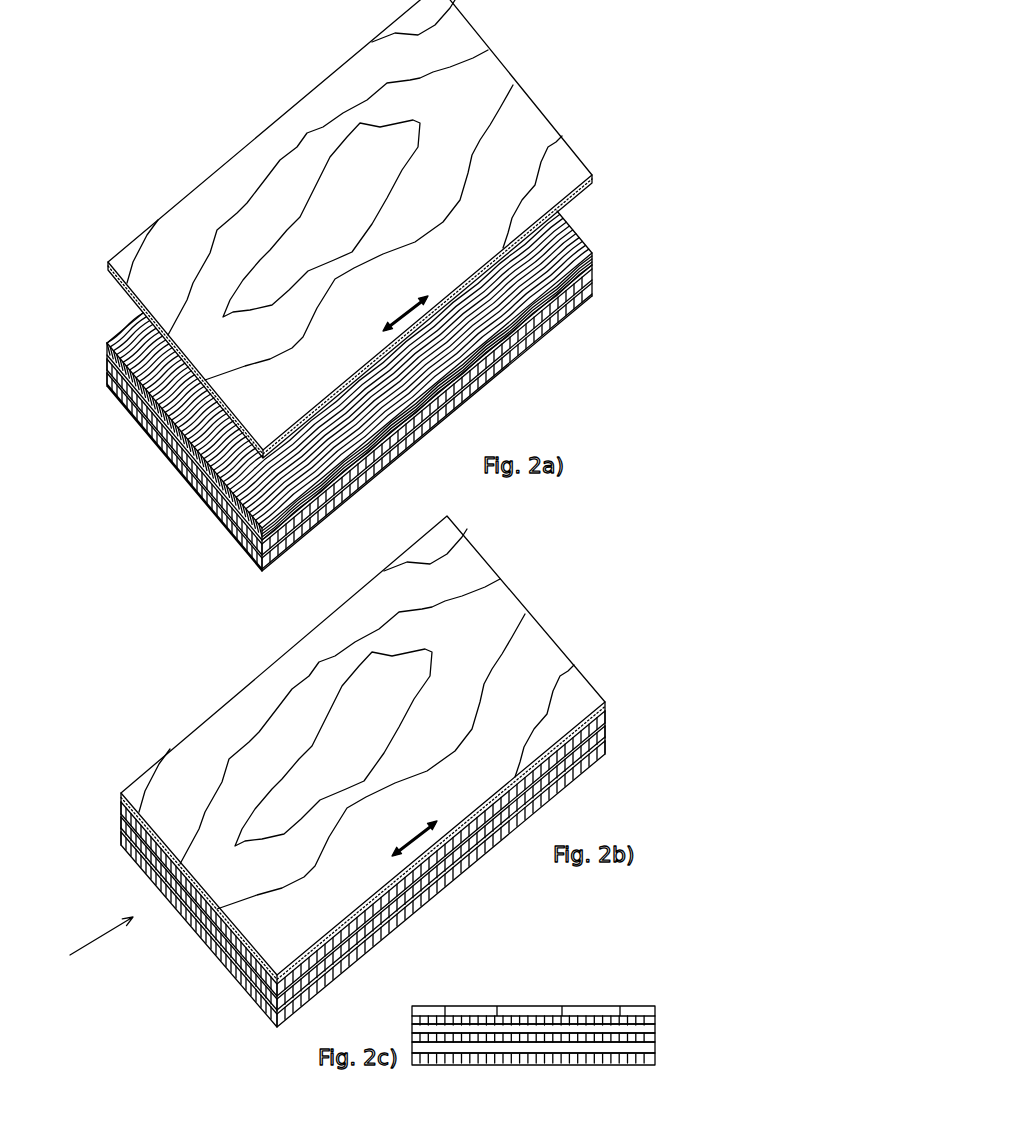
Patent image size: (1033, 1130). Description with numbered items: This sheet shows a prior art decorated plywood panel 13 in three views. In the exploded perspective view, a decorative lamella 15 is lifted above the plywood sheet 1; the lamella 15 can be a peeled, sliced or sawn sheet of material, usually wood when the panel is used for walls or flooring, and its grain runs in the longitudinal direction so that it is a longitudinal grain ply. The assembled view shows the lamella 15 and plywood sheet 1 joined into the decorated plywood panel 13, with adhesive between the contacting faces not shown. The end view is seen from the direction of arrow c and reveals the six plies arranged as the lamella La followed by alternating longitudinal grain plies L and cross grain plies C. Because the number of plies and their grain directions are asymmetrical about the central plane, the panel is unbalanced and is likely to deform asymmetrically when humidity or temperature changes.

In FIG. 2A, the plywood sheet 1 is at (565, 235).
In FIG. 2A, the decorated plywood panel 13 is at (404, 229).
In FIG. 2B, the decorated plywood panel 13 is at (505, 673).
In FIG. 2A, the decorative lamella 15 is at (595, 61).
In FIG. 2B, the arrow c is at (86, 953).
In FIG. 2C, the lamella ply La is at (600, 1007).
In FIG. 2C, the longitudinal grain ply L is at (660, 1053).
In FIG. 2C, the cross grain ply C is at (573, 1048).